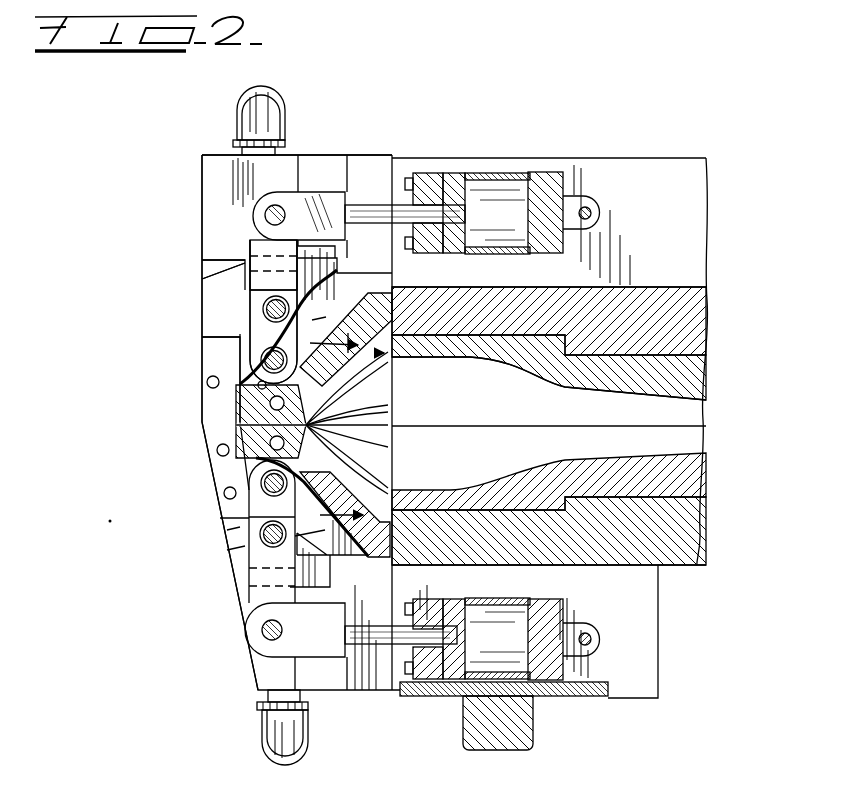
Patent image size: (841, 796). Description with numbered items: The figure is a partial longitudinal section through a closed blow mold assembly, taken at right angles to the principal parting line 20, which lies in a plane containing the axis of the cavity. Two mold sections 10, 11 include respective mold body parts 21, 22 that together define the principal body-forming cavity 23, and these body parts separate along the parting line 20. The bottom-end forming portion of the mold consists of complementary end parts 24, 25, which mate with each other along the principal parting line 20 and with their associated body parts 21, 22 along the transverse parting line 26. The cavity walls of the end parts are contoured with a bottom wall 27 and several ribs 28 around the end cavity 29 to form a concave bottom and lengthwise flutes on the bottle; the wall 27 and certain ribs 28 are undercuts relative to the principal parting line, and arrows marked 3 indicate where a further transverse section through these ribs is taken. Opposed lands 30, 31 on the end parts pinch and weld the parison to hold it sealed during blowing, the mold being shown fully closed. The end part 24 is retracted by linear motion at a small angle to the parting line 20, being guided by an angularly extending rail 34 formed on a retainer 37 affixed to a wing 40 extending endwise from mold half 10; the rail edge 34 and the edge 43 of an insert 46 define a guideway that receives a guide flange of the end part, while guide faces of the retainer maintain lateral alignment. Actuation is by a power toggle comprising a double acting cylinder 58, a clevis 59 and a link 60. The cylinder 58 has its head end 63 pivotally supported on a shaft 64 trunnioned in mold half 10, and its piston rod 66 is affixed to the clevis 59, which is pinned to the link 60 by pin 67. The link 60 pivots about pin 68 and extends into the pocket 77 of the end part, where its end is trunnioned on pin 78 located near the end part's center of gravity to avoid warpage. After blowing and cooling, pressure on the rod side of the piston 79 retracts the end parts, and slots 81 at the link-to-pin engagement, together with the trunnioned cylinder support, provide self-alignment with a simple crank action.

The section line 3- 3 is at (339, 426).
The mold section 10 is at (722, 316).
The mold section 11 is at (722, 486).
The principal parting line 20 is at (500, 425).
The mold body part 21 is at (692, 384).
The mold body part 22 is at (697, 495).
The body-forming cavity 23 is at (470, 461).
The mold end part 24 is at (404, 290).
The mold end part 25 is at (373, 560).
The transverse parting line 26 is at (388, 376).
The bottom wall 27 is at (340, 399).
The ribs 28 is at (372, 447).
The end cavity 29 is at (378, 475).
The land 30 is at (350, 412).
The land 31 is at (345, 428).
The rail 34 is at (248, 311).
The retainer 37 is at (218, 338).
The wing 40 is at (215, 200).
The insert edge 43 is at (216, 292).
The insert 46 is at (210, 279).
The double acting cylinder 58 is at (489, 165).
The clevis 59 is at (311, 196).
The link 60 is at (255, 272).
The head end 63 is at (560, 187).
The shaft 64 is at (598, 212).
The piston rod 66 is at (362, 224).
The pin 67 is at (277, 207).
The pin 68 is at (303, 298).
The pocket 77 is at (249, 360).
The pin 78 is at (320, 383).
The piston 79 is at (458, 240).
The slot 81 is at (258, 385).